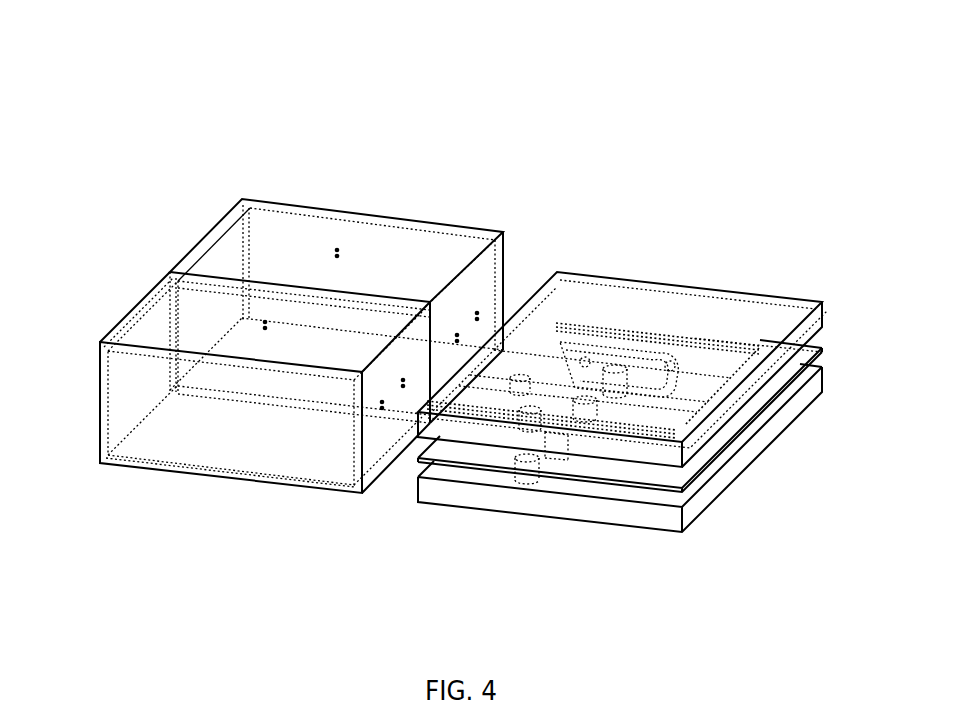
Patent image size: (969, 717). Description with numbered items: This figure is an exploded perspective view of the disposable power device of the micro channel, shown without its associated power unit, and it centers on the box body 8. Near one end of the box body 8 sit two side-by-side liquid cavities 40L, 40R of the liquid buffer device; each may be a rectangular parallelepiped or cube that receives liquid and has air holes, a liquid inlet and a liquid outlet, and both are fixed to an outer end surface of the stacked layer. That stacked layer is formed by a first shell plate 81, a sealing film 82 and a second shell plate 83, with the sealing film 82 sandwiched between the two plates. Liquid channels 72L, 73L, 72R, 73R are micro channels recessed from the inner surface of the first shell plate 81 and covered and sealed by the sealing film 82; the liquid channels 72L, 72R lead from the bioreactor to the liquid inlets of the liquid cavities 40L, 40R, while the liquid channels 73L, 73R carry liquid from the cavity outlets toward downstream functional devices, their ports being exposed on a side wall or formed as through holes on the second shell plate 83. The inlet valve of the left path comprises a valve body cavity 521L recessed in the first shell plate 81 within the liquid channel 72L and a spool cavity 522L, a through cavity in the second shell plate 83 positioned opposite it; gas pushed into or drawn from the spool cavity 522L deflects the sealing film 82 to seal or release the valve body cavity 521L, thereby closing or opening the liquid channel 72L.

The box body 8 is at (262, 103).
The liquid cavity 40L is at (125, 333).
The liquid cavity 40R is at (200, 248).
The liquid channel 72L is at (458, 407).
The liquid channel 72R is at (675, 333).
The liquid channel 73L is at (518, 380).
The liquid channel 73R is at (613, 357).
The first shell plate 81 is at (813, 318).
The sealing film 82 is at (807, 357).
The second shell plate 83 is at (798, 400).
The valve body cavity 521L is at (528, 415).
The spool cavity 522L is at (522, 471).